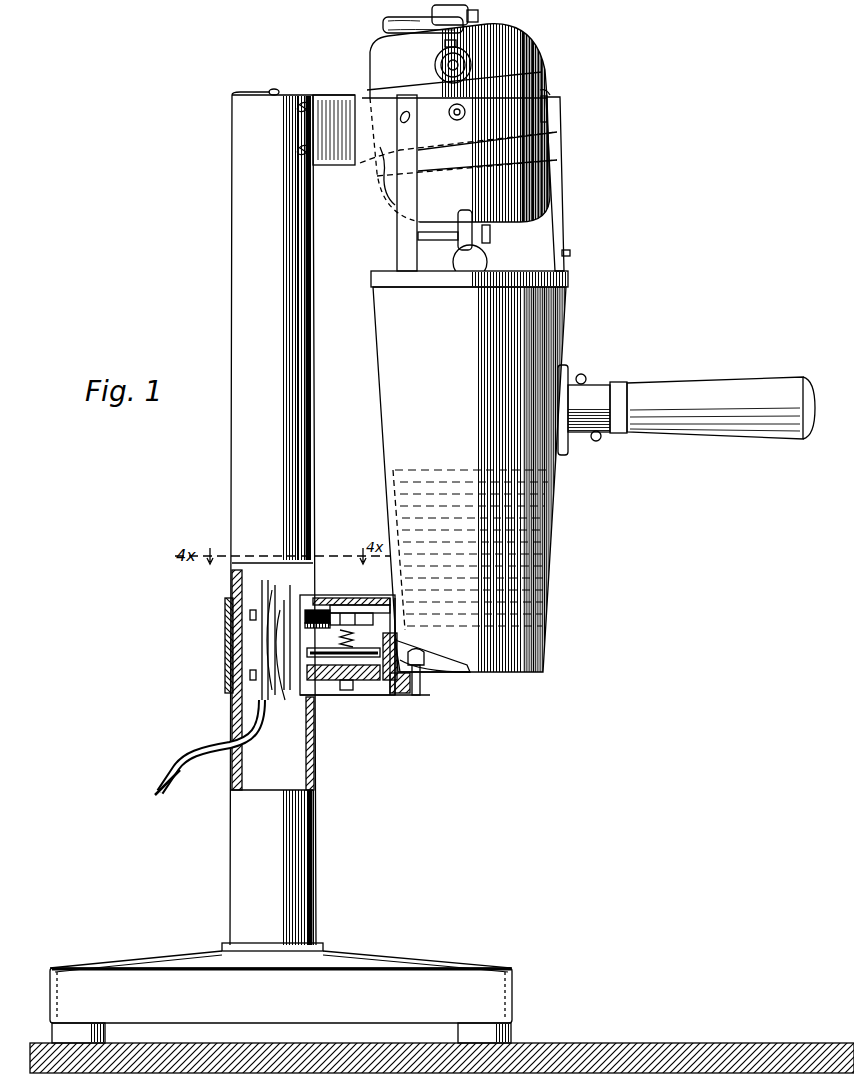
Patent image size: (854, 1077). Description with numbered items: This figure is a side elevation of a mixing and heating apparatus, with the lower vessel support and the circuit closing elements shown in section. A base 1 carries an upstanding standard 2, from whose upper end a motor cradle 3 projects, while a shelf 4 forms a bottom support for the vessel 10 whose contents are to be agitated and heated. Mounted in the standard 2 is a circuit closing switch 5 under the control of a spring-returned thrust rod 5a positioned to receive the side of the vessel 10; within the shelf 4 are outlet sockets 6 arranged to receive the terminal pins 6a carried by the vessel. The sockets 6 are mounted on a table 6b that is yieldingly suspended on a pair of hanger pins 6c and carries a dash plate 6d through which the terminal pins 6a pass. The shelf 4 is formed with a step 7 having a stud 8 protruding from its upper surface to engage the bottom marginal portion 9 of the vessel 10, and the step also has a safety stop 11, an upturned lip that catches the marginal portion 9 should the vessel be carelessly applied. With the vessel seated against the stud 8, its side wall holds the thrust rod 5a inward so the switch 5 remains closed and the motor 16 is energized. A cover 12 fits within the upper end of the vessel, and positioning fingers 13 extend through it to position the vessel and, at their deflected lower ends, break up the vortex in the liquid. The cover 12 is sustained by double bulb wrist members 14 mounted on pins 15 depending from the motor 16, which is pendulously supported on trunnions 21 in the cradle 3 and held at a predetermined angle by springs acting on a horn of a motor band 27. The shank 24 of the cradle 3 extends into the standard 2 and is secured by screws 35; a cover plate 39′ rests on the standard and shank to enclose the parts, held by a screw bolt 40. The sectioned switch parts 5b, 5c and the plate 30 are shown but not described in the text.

The base 1 is at (432, 975).
The standard 2 is at (232, 428).
The motor cradle 3 is at (386, 140).
The shelf 4 is at (343, 605).
The circuit closing switch 5 is at (300, 598).
The thrust rod 5a is at (362, 615).
The slide block 5b is at (306, 612).
The slide guide 5c is at (306, 628).
The outlet sockets 6 is at (370, 660).
The terminal pins 6a is at (375, 665).
The table 6b is at (340, 682).
The hanger pins 6c is at (340, 633).
The dash plate 6d is at (390, 700).
The step 7 is at (422, 683).
The stud 8 is at (416, 695).
The bottom marginal portion 9 is at (398, 695).
The vessel 10 is at (470, 482).
The safety stop 11 is at (455, 668).
The cover 12 is at (505, 272).
The positioning fingers 13 is at (397, 254).
The double bulb wrist members 14 is at (482, 256).
The pins 15 is at (458, 246).
The motor 16 is at (533, 47).
The trunnions 21 is at (451, 118).
The shank 24 is at (334, 108).
The motor band 27 is at (546, 90).
The cover plate 30 is at (260, 590).
The screws 35 is at (303, 148).
The cover plate 39′ is at (245, 93).
The screw bolt 40 is at (274, 90).